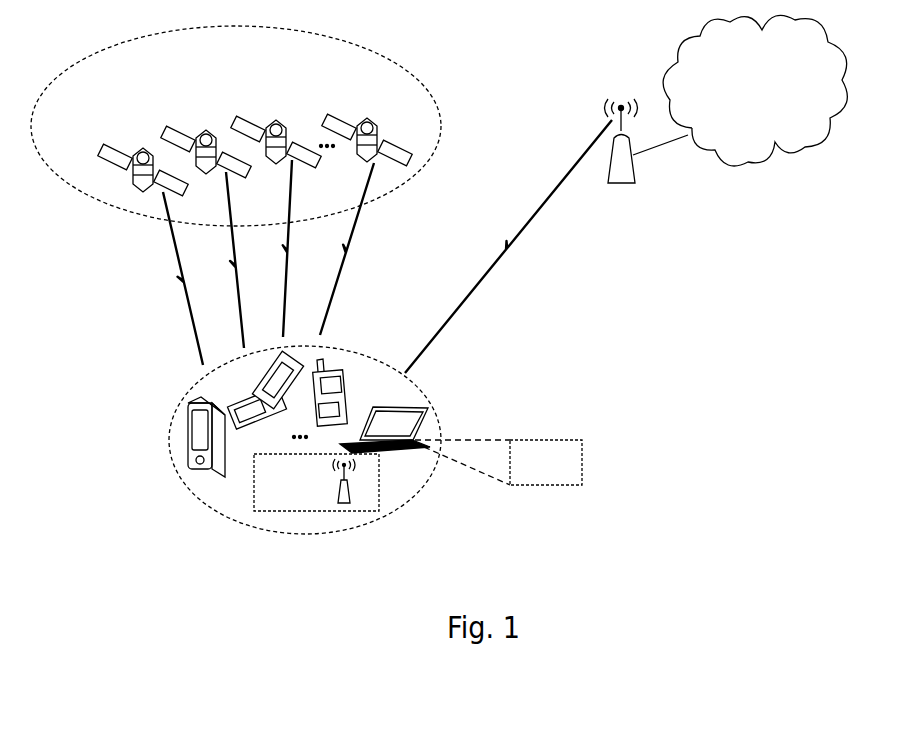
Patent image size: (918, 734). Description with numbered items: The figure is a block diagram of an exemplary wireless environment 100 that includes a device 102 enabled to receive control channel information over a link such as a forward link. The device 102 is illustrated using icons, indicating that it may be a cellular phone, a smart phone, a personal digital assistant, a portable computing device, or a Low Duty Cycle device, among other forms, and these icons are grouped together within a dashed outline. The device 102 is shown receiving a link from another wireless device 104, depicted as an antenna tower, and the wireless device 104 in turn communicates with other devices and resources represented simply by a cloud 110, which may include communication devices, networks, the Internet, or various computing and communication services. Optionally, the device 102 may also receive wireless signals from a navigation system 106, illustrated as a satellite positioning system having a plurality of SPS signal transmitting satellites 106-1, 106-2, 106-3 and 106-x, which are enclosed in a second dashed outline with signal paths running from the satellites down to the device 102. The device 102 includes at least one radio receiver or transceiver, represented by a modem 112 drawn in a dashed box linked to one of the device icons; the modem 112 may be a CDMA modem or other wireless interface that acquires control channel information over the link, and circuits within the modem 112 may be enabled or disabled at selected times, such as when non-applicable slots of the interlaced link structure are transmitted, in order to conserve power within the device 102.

The wireless environment 100 is at (594, 405).
The device 102 is at (308, 535).
The wireless device 104 is at (617, 187).
The navigation system 106 is at (140, 216).
The SPS signal transmitting satellite 106-1 is at (140, 147).
The SPS signal transmitting satellite 106-2 is at (200, 130).
The SPS signal transmitting satellite 106-3 is at (273, 121).
The SPS signal transmitting satellite 106-x is at (364, 118).
The cloud 110 is at (743, 167).
The modem 112 is at (498, 462).